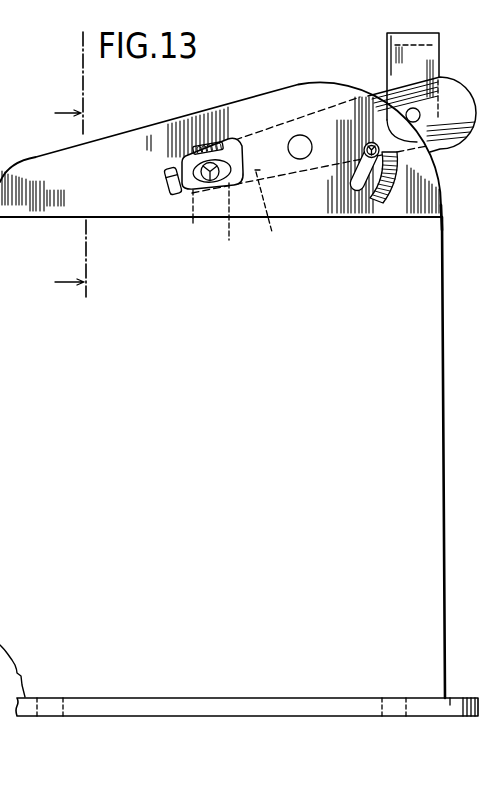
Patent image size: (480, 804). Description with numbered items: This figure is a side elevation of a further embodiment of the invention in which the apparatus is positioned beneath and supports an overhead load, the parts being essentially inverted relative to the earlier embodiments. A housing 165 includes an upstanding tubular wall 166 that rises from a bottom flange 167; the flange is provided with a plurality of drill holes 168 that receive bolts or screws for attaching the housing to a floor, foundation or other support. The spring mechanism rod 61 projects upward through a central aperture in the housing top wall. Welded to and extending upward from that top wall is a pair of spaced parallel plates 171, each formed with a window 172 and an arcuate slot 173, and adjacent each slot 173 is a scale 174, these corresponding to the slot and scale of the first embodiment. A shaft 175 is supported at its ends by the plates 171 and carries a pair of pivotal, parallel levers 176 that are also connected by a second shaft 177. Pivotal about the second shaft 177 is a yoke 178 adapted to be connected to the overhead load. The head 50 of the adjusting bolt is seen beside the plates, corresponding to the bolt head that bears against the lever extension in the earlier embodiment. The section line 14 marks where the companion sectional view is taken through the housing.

The section line 14 is at (83, 164).
The head 50 is at (165, 192).
The rod 61 is at (193, 224).
The housing 165 is at (450, 357).
The upstanding tubular wall 166 is at (443, 232).
The bottom flange 167 is at (257, 698).
The drill holes 168 is at (53, 707).
The spaced parallel plates 171 is at (153, 143).
The window 172 is at (235, 140).
The arcuate slot 173 is at (360, 187).
The scale 174 is at (378, 203).
The shaft 175 is at (300, 159).
The levers 176 is at (452, 134).
The second shaft 177 is at (412, 114).
The yoke 178 is at (396, 51).